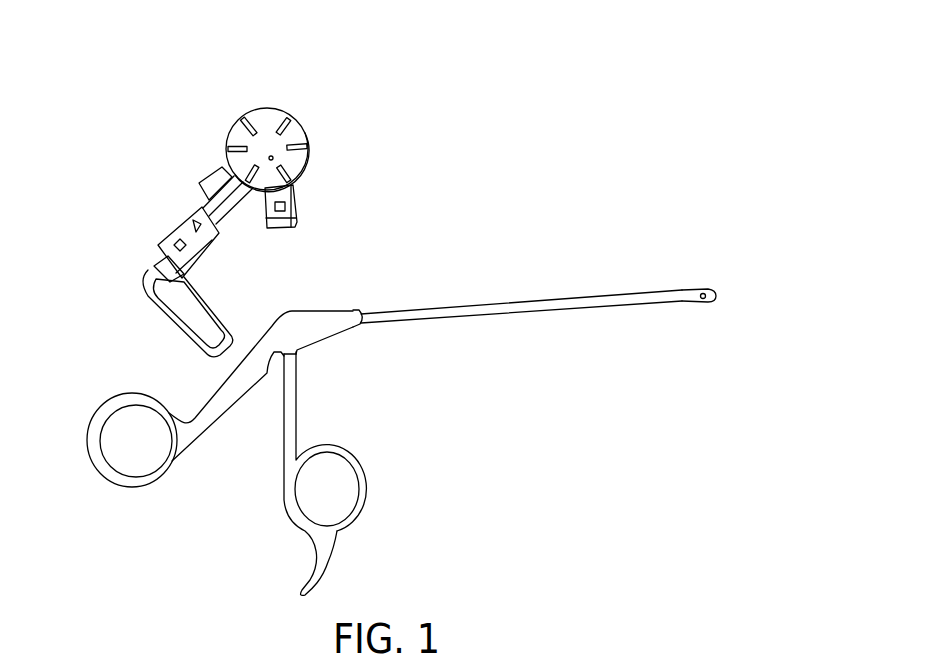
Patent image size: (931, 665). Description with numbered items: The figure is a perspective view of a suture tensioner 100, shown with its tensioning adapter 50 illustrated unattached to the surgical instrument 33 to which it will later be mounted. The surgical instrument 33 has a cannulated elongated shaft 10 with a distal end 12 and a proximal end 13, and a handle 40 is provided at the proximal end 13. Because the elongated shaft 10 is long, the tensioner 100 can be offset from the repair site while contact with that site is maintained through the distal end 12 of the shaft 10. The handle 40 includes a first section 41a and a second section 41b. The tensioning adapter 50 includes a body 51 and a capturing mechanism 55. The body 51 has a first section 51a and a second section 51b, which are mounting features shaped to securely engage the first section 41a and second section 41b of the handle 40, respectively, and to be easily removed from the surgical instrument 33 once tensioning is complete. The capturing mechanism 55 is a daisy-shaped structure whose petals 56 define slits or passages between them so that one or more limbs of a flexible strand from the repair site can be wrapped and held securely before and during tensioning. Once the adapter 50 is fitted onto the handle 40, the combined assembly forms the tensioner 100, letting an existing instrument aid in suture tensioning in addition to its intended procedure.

The tensioner 100 is at (708, 173).
The surgical instrument 33 is at (708, 395).
The elongated shaft 10 is at (478, 306).
The distal end 12 is at (692, 303).
The proximal end 13 is at (351, 330).
The handle 40 is at (223, 388).
The first section of handle 41a is at (262, 360).
The second section of handle 41b is at (325, 322).
The tensioning adapter 50 is at (226, 88).
The body 51 is at (190, 213).
The first section of body 51a is at (155, 264).
The second section of body 51b is at (300, 192).
The capturing mechanism 55 is at (283, 110).
The petals 56 is at (257, 115).